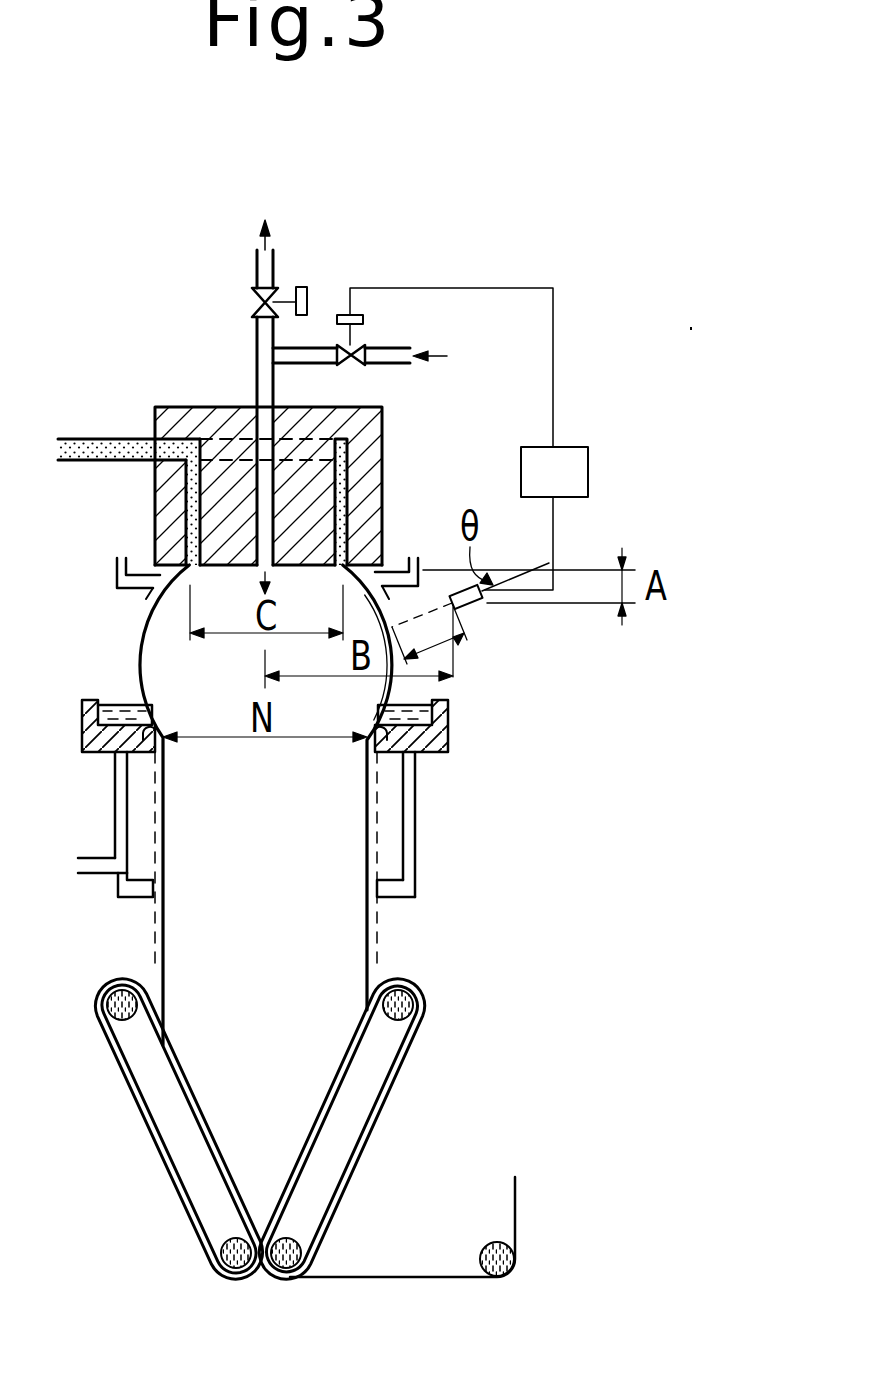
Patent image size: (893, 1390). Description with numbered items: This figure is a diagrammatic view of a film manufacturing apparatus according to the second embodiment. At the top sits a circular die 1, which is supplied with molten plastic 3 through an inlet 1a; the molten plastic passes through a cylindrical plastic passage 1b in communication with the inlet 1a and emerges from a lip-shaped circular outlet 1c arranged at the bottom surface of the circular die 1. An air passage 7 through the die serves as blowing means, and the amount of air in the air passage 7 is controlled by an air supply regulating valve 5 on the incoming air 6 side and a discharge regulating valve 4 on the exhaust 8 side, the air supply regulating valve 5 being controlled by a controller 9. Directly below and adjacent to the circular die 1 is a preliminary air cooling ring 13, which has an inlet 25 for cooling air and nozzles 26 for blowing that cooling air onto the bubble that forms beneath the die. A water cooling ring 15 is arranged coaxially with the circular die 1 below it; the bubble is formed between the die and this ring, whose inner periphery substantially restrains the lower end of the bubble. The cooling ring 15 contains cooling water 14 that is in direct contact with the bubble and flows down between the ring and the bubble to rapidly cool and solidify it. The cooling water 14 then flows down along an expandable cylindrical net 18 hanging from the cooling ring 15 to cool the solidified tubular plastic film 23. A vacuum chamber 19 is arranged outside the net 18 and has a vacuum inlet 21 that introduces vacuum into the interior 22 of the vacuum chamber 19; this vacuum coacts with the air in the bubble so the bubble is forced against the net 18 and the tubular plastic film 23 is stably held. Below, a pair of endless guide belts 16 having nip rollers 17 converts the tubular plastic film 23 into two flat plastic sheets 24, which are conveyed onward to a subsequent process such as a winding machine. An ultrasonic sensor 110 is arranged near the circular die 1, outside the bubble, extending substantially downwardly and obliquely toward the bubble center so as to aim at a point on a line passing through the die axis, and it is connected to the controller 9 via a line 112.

The circular die 1 is at (384, 428).
The inlet 1a is at (150, 460).
The cylindrical plastic passage 1b is at (345, 498).
The lip-shaped circular outlet 1c is at (186, 565).
The molten plastic 3 is at (108, 439).
The discharge regulating valve 4 is at (304, 286).
The air supply regulating valve 5 is at (365, 319).
The gas inlet valve 6 is at (374, 357).
The air passage 7 is at (252, 422).
The exhaust flow 8 is at (279, 233).
The controller 9 is at (590, 468).
The preliminary air cooling ring 13 is at (115, 576).
The cooling water 14 is at (415, 702).
The cooling ring 15 is at (448, 730).
The endless guide belts 16 is at (385, 1096).
The nip rollers 17 is at (300, 1253).
The cylindrical net 18 is at (395, 803).
The vacuum chamber 19 is at (416, 852).
The vacuum inlet 21 is at (96, 876).
The interior 22 is at (137, 798).
The tubular plastic film 23 is at (365, 880).
The plastic sheets 24 is at (447, 1277).
The inlet 25 is at (120, 560).
The nozzles 26 is at (148, 600).
The ultrasonic sensor 110 is at (480, 600).
The line 112 is at (555, 553).